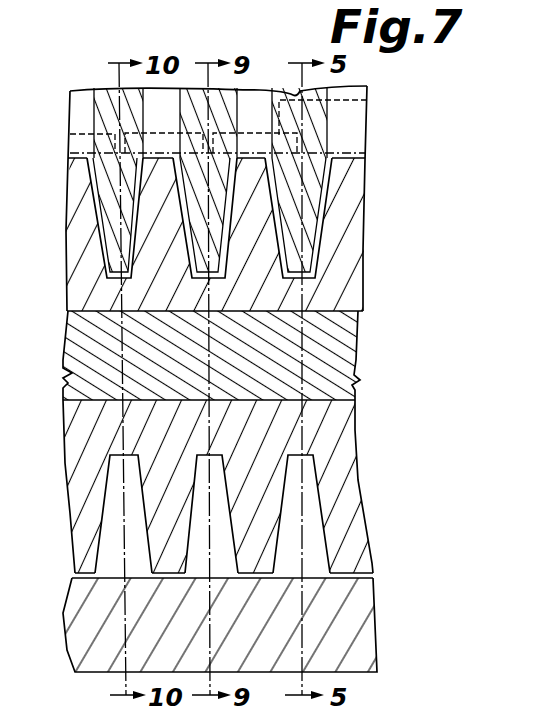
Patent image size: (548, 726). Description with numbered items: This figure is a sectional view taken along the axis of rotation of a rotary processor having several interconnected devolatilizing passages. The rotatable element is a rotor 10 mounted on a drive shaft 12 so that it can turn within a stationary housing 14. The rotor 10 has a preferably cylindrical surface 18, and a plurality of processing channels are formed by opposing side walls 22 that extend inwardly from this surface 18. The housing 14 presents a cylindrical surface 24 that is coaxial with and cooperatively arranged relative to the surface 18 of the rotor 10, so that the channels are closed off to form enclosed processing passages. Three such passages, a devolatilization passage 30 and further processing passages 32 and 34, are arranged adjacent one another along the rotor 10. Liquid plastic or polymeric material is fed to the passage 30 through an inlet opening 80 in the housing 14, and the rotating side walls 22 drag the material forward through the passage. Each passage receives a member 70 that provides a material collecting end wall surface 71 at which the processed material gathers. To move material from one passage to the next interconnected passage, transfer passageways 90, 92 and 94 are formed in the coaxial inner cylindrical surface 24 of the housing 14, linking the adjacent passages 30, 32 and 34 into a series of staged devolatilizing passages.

The rotor 10 is at (335, 282).
The drive shaft 12 is at (352, 348).
The housing 14 is at (357, 633).
The surface 18 is at (356, 157).
The side walls 22 is at (151, 549).
The cylindrical surface 24 is at (84, 159).
The devolatilization passage 30 is at (307, 525).
The processing passage 32 is at (217, 525).
The processing passage 34 is at (130, 525).
The member 70 is at (295, 96).
The material collecting end wall surface 71 is at (129, 226).
The inlet opening 80 is at (364, 127).
The transfer passageway 90 is at (249, 141).
The transfer passageway 92 is at (158, 143).
The transfer passageway 94 is at (78, 140).